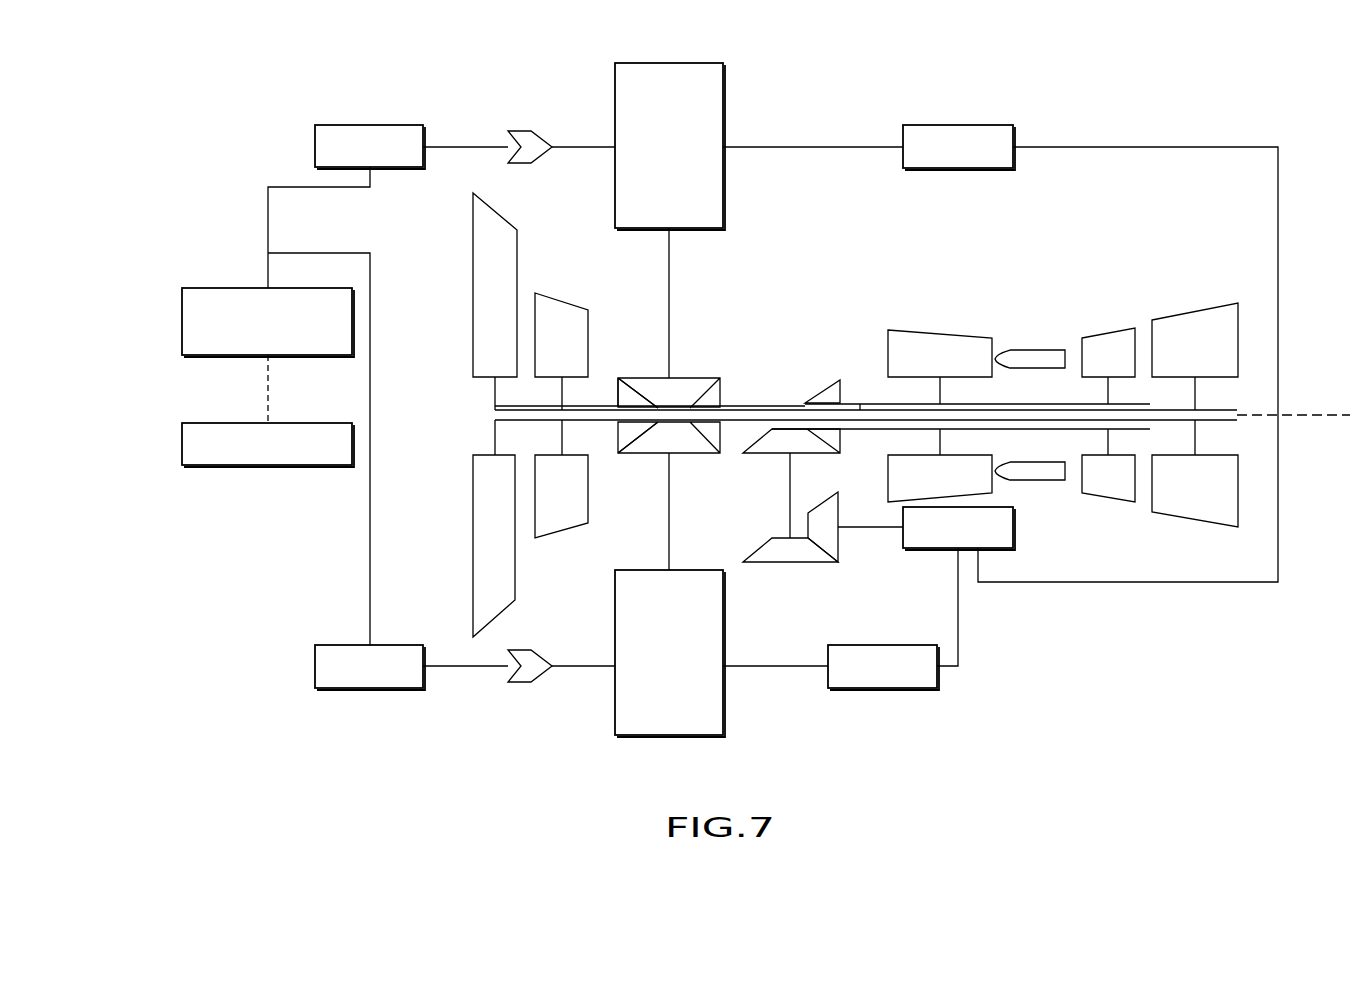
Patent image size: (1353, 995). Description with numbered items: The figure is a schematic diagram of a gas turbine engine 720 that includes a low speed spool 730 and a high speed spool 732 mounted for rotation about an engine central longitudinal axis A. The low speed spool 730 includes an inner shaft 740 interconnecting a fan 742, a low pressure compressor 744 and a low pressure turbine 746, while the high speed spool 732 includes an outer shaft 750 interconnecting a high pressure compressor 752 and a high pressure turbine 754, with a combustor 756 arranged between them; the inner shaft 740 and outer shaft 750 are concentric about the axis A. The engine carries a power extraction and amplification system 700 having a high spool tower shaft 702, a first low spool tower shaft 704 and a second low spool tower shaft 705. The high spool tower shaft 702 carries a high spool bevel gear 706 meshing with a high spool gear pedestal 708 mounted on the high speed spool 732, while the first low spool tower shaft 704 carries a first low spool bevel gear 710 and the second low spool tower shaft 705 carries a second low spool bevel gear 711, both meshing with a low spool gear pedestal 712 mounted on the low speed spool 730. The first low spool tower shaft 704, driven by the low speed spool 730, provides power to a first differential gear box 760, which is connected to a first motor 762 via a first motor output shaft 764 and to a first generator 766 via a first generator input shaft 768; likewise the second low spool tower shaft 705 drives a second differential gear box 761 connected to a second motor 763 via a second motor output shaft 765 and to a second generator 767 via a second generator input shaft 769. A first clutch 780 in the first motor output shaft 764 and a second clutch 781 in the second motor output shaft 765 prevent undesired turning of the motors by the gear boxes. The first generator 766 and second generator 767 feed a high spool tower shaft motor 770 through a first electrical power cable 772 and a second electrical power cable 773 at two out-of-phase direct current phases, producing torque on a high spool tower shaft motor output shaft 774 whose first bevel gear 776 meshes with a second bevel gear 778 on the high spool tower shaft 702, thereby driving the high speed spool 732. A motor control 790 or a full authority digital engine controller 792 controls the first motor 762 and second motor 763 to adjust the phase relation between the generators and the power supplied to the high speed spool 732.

The power extraction and amplification system 700 is at (453, 707).
The high spool tower shaft 702 is at (794, 470).
The first low spool tower shaft 704 is at (669, 490).
The second low spool tower shaft 705 is at (669, 262).
The high spool bevel gear 706 is at (768, 442).
The high spool gear pedestal 708 is at (820, 400).
The first low spool bevel gear 710 is at (655, 442).
The second low spool bevel gear 711 is at (654, 388).
The low spool gear pedestal 712 is at (619, 406).
The gas turbine engine 720 is at (256, 119).
The low speed spool 730 is at (722, 402).
The high speed spool 732 is at (858, 406).
The inner shaft 740 is at (757, 408).
The fan 742 is at (488, 228).
The low pressure compressor 744 is at (548, 306).
The low pressure turbine 746 is at (1180, 340).
The outer shaft 750 is at (866, 408).
The high pressure compressor 752 is at (945, 346).
The high pressure turbine 754 is at (1098, 348).
The combustor 756 is at (1026, 358).
The first differential gear box 760 is at (670, 653).
The second differential gear box 761 is at (670, 146).
The first motor 762 is at (370, 667).
The second motor 763 is at (370, 147).
The first motor output shaft 764 is at (565, 666).
The second motor output shaft 765 is at (575, 147).
The first generator 766 is at (883, 667).
The second generator 767 is at (959, 147).
The first generator input shaft 768 is at (773, 666).
The second generator input shaft 769 is at (789, 147).
The high spool tower shaft motor 770 is at (959, 528).
The first electrical power cable 772 is at (958, 610).
The second electrical power cable 773 is at (1098, 147).
The high spool tower shaft motor output shaft 774 is at (877, 530).
The first bevel gear 776 is at (822, 524).
The second bevel gear 778 is at (772, 546).
The first clutch 780 is at (530, 656).
The second clutch 781 is at (520, 136).
The motor control 790 is at (268, 322).
The full authority digital engine controller 792 is at (268, 411).
The engine central longitudinal axis A is at (1318, 420).